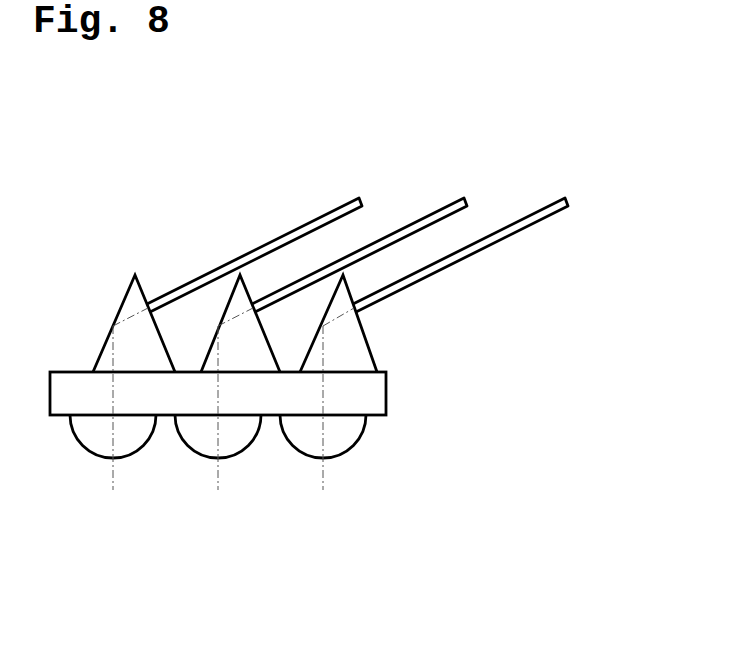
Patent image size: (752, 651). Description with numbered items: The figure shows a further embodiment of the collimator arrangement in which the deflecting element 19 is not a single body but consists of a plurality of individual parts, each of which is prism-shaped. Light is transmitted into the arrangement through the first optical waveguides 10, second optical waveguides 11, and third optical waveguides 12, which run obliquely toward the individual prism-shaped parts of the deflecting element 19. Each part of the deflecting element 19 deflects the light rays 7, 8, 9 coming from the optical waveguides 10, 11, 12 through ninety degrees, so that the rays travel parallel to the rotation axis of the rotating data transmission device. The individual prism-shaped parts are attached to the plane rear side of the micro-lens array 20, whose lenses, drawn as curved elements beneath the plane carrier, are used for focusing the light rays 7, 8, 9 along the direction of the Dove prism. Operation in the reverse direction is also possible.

The light ray 7 is at (332, 477).
The light ray 8 is at (226, 477).
The light ray 9 is at (120, 477).
The first optical waveguide 10 is at (363, 187).
The second optical waveguide 11 is at (467, 187).
The third optical waveguide 12 is at (568, 187).
The deflecting element 19 is at (119, 310).
The micro-lens array 20 is at (372, 392).